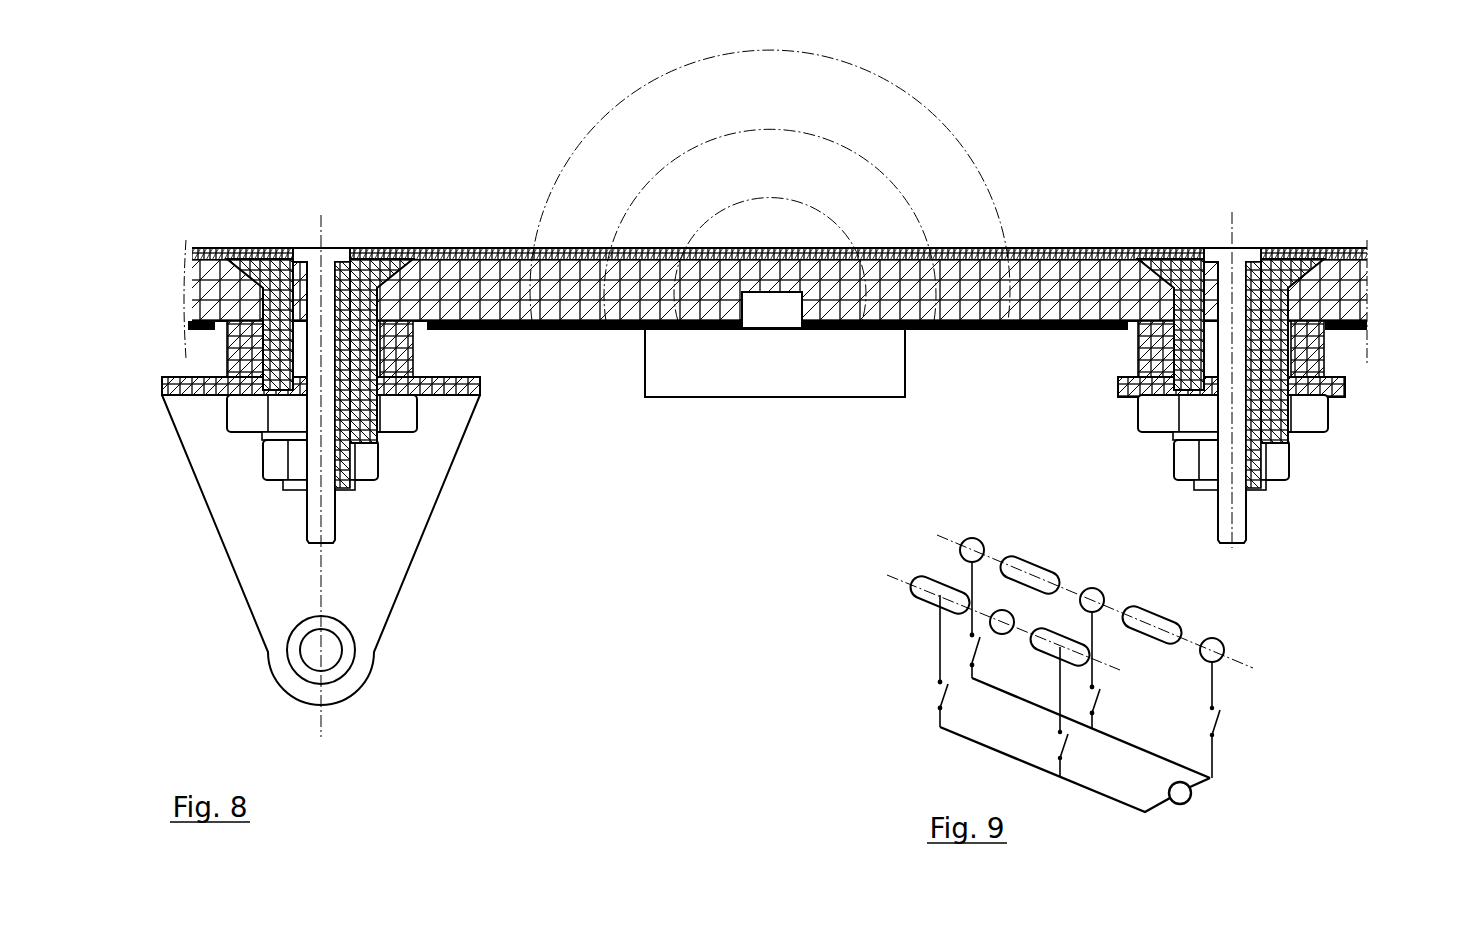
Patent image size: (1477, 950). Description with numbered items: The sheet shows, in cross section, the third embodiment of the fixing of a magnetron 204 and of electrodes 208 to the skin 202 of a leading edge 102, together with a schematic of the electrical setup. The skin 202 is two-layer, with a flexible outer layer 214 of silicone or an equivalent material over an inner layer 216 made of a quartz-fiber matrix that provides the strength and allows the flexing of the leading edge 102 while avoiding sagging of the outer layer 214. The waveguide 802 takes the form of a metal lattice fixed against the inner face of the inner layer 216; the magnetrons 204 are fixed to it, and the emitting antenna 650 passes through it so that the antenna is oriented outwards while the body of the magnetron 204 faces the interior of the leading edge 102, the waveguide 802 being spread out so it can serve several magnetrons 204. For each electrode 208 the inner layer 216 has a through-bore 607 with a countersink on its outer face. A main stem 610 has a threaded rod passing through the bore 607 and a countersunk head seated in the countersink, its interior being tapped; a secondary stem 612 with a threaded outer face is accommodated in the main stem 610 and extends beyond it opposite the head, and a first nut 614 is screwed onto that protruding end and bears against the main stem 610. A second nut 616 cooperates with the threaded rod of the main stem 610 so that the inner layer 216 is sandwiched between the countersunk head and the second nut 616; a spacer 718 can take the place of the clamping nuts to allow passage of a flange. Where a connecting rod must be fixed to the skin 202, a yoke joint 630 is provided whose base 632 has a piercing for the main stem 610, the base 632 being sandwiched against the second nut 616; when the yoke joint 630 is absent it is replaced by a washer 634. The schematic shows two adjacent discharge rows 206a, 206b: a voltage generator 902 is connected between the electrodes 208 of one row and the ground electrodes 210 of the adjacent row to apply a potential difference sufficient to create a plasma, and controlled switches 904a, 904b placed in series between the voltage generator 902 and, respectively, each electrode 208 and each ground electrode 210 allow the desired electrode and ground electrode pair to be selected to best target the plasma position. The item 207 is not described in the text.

In FIG. 8, the leading edge 102 is at (1054, 125).
In FIG. 8, the skin 202 is at (1336, 135).
In FIG. 8, the magnetron 204 is at (648, 444).
In FIG. 9, the discharge row 206a is at (1252, 668).
In FIG. 9, the adjacent discharge row 206b is at (897, 580).
In FIG. 8, the detection field 207 is at (968, 155).
In FIG. 8, the electrode 208 is at (330, 255).
In FIG. 9, the electrode 208 is at (1096, 590).
In FIG. 9, the ground electrode 210 is at (918, 603).
In FIG. 8, the outer layer 214 is at (1372, 256).
In FIG. 8, the inner layer 216 is at (1350, 292).
In FIG. 8, the through-bore 607 is at (418, 265).
In FIG. 8, the main stem 610 is at (257, 277).
In FIG. 8, the secondary stem 612 is at (378, 262).
In FIG. 8, the first nut 614 is at (280, 460).
In FIG. 8, the second nut 616 is at (252, 417).
In FIG. 8, the yoke joint 630 is at (260, 563).
In FIG. 8, the base 632 is at (184, 378).
In FIG. 8, the washer 634 is at (1347, 384).
In FIG. 8, the emitting antenna 650 is at (772, 308).
In FIG. 8, the spacer 718 is at (392, 352).
In FIG. 8, the waveguide 802 is at (960, 330).
In FIG. 9, the voltage generator 902 is at (1186, 804).
In FIG. 9, the controlled switch 904a is at (1219, 728).
In FIG. 9, the controlled switch 904b is at (1068, 740).